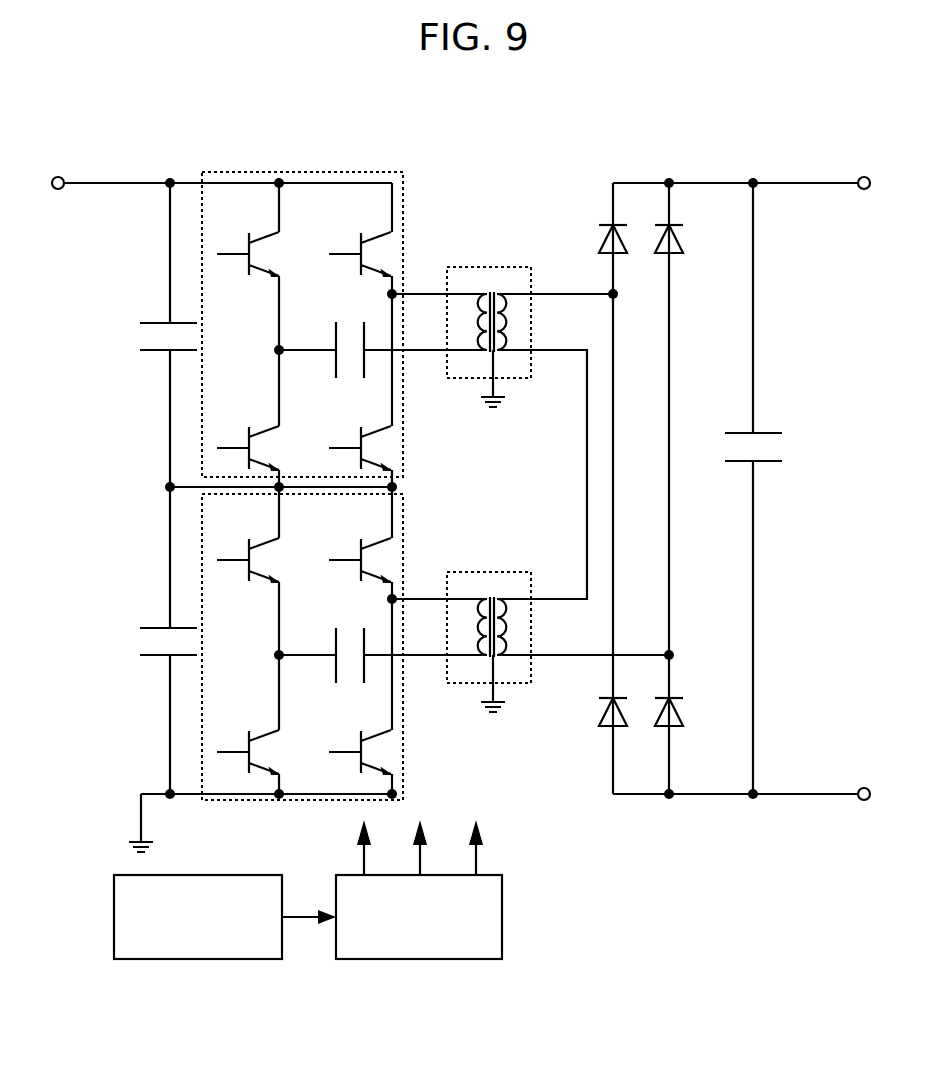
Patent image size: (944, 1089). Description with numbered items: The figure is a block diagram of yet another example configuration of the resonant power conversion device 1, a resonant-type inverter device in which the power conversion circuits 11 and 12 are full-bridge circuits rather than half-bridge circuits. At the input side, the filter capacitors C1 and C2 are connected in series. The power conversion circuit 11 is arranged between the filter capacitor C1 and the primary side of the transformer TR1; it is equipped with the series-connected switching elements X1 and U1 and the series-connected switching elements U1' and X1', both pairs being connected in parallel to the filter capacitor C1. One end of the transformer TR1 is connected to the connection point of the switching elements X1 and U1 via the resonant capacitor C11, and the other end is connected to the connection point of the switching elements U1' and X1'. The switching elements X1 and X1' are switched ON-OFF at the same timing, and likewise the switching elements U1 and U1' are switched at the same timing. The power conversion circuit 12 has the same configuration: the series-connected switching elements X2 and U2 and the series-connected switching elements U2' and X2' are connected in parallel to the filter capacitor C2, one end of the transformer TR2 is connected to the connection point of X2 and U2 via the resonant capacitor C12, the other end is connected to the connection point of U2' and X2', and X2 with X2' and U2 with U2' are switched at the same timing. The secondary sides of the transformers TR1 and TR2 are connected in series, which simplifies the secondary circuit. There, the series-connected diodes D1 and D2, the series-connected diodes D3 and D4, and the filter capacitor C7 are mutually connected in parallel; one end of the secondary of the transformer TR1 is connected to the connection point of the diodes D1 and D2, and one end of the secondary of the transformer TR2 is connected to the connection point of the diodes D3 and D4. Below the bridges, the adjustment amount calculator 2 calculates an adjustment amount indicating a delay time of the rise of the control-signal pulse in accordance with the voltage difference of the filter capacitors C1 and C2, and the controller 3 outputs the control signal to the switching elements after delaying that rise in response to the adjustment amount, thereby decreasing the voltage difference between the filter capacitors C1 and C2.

The resonant power conversion device 1 is at (479, 155).
The power conversion circuit 11 is at (290, 172).
The power conversion circuit 12 is at (202, 737).
The adjustment amount calculator 2 is at (228, 875).
The controller 3 is at (372, 959).
The filter capacitor C1 is at (150, 323).
The filter capacitor C2 is at (150, 628).
The resonant capacitor C11 is at (338, 325).
The resonant capacitor C12 is at (338, 630).
The filter capacitor C7 is at (769, 433).
The switching element X1 is at (246, 234).
The switching element U1 is at (245, 427).
The switching element X1' is at (347, 427).
The switching element U1' is at (347, 234).
The switching element X2 is at (245, 542).
The switching element U2 is at (245, 731).
The switching element X2' is at (347, 731).
The switching element U2' is at (347, 542).
The transformer TR1 is at (480, 267).
The transformer TR2 is at (480, 572).
The diode D1 is at (602, 225).
The diode D2 is at (602, 726).
The diode D3 is at (679, 254).
The diode D4 is at (679, 727).